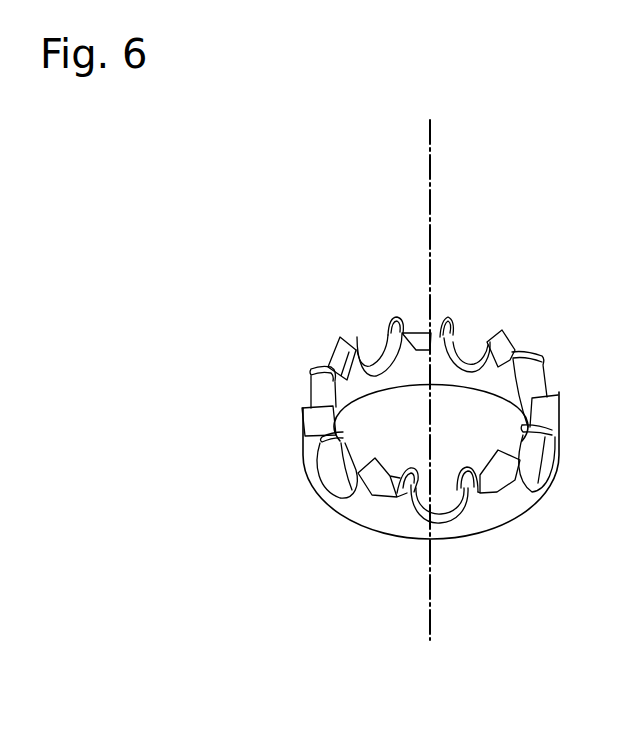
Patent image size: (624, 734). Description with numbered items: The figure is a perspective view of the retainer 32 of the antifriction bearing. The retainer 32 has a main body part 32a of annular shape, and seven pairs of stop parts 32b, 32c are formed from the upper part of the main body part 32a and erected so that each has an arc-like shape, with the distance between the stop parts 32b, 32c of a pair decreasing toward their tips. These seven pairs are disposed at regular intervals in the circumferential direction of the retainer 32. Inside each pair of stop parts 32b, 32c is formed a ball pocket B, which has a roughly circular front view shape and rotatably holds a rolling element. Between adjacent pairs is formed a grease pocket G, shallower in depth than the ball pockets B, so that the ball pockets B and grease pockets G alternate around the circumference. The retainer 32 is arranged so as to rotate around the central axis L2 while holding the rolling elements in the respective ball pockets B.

The retainer 32 is at (303, 268).
The main body part 32a is at (366, 512).
The stop part 32b is at (450, 312).
The stop part 32c is at (506, 324).
The ball pocket B is at (378, 368).
The grease pocket G is at (533, 352).
The central axis L2 is at (431, 157).